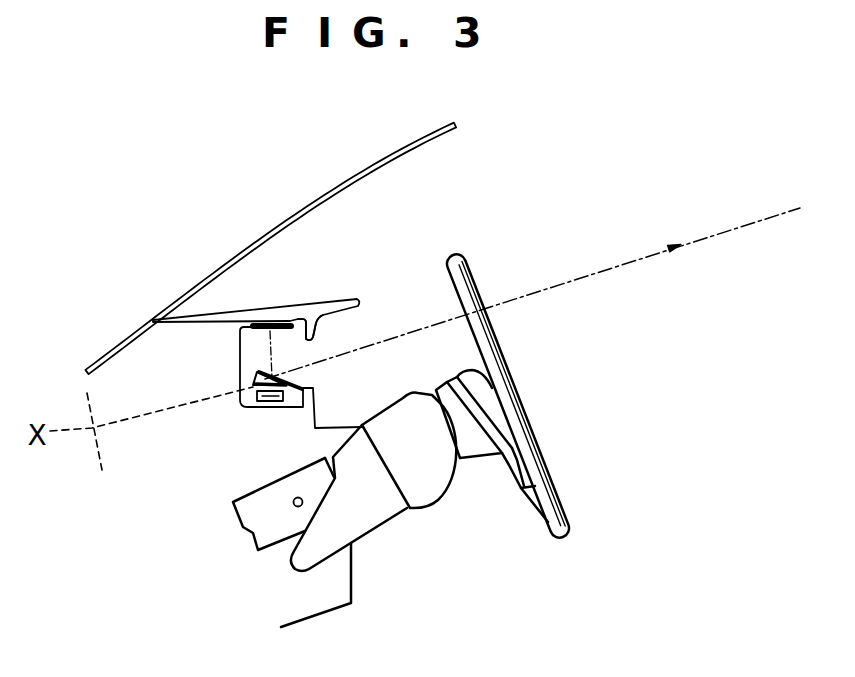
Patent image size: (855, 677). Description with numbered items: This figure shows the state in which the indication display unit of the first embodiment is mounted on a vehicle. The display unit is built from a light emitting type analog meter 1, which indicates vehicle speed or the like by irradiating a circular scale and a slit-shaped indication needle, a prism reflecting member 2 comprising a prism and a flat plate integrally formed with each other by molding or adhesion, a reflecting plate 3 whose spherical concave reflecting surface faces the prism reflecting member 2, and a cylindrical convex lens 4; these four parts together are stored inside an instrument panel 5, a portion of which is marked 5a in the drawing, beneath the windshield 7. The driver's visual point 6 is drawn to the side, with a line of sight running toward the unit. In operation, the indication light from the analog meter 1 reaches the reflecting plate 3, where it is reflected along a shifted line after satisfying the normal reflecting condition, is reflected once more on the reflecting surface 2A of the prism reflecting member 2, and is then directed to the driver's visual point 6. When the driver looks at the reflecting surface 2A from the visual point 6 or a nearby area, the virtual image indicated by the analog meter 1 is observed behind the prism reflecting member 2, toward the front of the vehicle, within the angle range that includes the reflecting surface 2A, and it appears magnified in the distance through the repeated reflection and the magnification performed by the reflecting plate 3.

The light emitting type analog meter 1 is at (299, 425).
The prism reflecting member 2 is at (257, 387).
The reflecting surface 2A is at (300, 378).
The reflecting plate 3 is at (240, 348).
The cylindrical convex lens 4 is at (266, 402).
The instrument panel 5 is at (262, 300).
The sun visor hook 5a is at (310, 314).
The visual point of the driver 6 is at (800, 208).
The windshield 7 is at (295, 215).